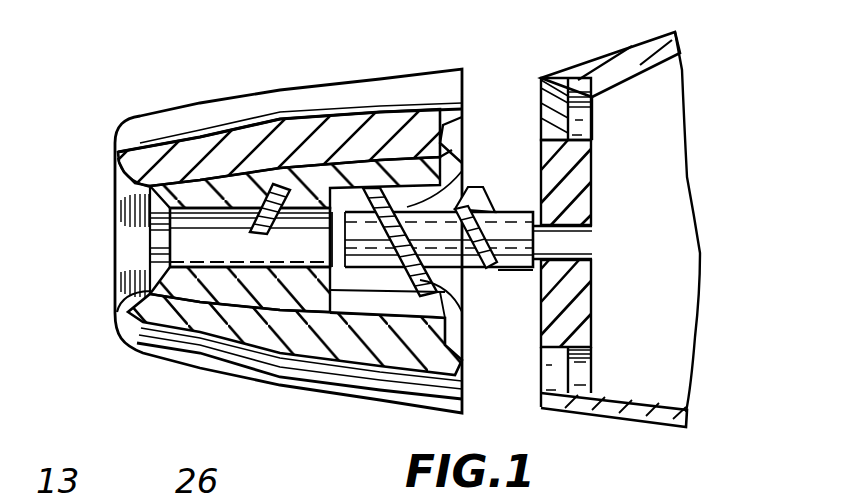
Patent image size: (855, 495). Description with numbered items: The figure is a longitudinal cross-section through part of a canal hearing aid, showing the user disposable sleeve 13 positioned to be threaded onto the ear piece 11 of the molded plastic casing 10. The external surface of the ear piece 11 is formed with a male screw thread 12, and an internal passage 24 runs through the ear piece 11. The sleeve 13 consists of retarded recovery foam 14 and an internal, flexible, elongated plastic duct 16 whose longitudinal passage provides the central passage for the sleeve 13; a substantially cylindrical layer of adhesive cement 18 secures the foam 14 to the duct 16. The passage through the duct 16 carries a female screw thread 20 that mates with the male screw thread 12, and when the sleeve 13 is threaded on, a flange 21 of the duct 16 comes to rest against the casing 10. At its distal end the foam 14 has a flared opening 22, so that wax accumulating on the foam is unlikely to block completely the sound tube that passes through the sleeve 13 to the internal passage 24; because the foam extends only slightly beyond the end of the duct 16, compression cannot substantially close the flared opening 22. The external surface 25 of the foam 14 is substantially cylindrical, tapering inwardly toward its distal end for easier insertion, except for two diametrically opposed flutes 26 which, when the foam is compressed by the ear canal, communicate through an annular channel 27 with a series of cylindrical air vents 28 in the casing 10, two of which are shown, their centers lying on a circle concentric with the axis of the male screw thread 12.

The molded plastic casing 10 is at (624, 62).
The ear piece 11 is at (492, 269).
The male screw thread 12 is at (466, 198).
The sleeve 13 is at (321, 81).
The retarded recovery foam 14 is at (268, 148).
The plastic duct 16 is at (200, 283).
The adhesive cement 18 is at (237, 307).
The female screw thread 20 is at (322, 313).
The flange 21 is at (462, 125).
The flared opening 22 is at (115, 190).
The internal passage 24 is at (592, 243).
The external surface 25 is at (378, 390).
The flutes 26 is at (413, 80).
The annular channel 27 is at (548, 371).
The cylindrical air vents 28 is at (576, 95).